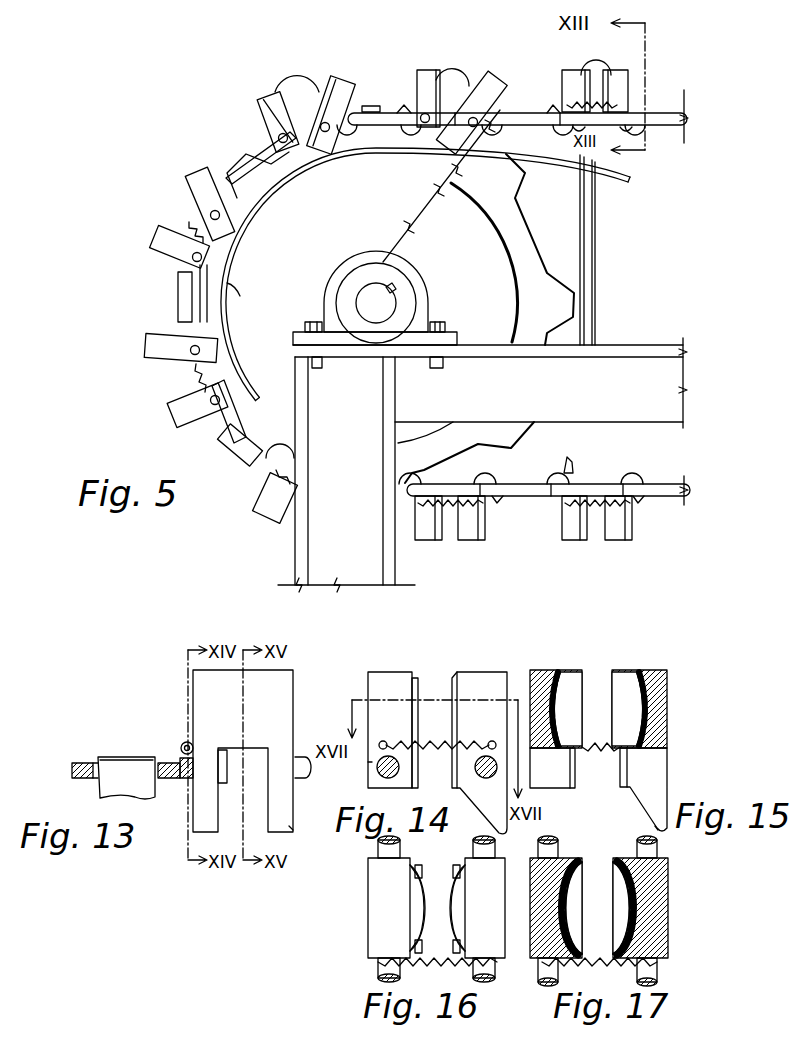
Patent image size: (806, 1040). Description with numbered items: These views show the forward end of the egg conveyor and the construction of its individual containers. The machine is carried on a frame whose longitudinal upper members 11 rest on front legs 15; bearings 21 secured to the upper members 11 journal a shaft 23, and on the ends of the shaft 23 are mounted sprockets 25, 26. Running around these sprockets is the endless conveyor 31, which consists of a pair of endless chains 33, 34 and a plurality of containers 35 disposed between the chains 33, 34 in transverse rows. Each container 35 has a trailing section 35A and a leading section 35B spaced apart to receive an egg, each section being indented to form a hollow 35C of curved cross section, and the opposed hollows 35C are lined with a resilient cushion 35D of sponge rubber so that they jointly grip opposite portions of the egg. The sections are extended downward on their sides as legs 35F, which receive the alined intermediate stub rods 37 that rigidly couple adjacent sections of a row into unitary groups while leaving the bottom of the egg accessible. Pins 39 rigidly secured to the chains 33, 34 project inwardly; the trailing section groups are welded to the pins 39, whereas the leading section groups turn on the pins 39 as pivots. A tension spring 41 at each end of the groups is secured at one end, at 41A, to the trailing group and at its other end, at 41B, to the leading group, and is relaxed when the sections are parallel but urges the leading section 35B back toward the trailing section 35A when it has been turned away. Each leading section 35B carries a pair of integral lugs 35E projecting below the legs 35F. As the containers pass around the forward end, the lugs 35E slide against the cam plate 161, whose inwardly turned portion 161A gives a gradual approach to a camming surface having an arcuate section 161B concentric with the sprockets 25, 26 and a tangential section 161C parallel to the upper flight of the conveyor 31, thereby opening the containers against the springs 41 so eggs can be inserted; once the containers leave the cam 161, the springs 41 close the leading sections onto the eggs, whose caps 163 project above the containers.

In FIG. 5, the longitudinal upper members 11 is at (653, 318).
In FIG. 5, the front legs 15 is at (300, 552).
In FIG. 5, the bearings 21 is at (425, 307).
In FIG. 5, the shaft 23 is at (362, 300).
In FIG. 5, the sprocket 25 is at (433, 222).
In FIG. 13, the sprocket 25 is at (118, 756).
In FIG. 5, the sprocket 26 is at (177, 298).
In FIG. 5, the endless conveyor 31 is at (155, 215).
In FIG. 5, the endless chain 33 is at (538, 114).
In FIG. 13, the endless chain 33 is at (72, 770).
In FIG. 5, the endless chain 34 is at (390, 117).
In FIG. 5, the container 35 is at (603, 552).
In FIG. 5, the trailing section 35A is at (258, 108).
In FIG. 14, the trailing section 35A is at (387, 677).
In FIG. 15, the trailing section 35A is at (530, 670).
In FIG. 16, the trailing section 35A is at (373, 915).
In FIG. 17, the trailing section 35A is at (532, 867).
In FIG. 5, the leading section 35B is at (342, 87).
In FIG. 13, the leading section 35B is at (283, 677).
In FIG. 14, the leading section 35B is at (483, 680).
In FIG. 15, the leading section 35B is at (677, 660).
In FIG. 16, the leading section 35B is at (465, 838).
In FIG. 17, the leading section 35B is at (668, 880).
In FIG. 15, the hollow 35C is at (553, 693).
In FIG. 17, the hollow 35C is at (637, 888).
In FIG. 14, the resilient cushion 35D is at (415, 677).
In FIG. 15, the resilient cushion 35D is at (553, 688).
In FIG. 16, the resilient cushion 35D is at (412, 900).
In FIG. 17, the resilient cushion 35D is at (637, 912).
In FIG. 5, the lugs 35E is at (573, 480).
In FIG. 13, the lugs 35E is at (289, 826).
In FIG. 15, the lugs 35E is at (647, 805).
In FIG. 14, the legs 35F is at (372, 762).
In FIG. 15, the legs 35F is at (545, 780).
In FIG. 13, the intermediate stub rods 37 is at (303, 758).
In FIG. 16, the intermediate stub rods 37 is at (377, 846).
In FIG. 17, the intermediate stub rods 37 is at (560, 845).
In FIG. 13, the pins 39 is at (181, 760).
In FIG. 14, the pins 39 is at (400, 767).
In FIG. 16, the pins 39 is at (378, 972).
In FIG. 13, the tension spring 41 is at (183, 744).
In FIG. 14, the tension spring 41 is at (430, 740).
In FIG. 15, the tension spring 41 is at (600, 755).
In FIG. 16, the tension spring 41 is at (467, 960).
In FIG. 14, the spring securing point 41A is at (383, 740).
In FIG. 14, the spring securing point 41B is at (492, 740).
In FIG. 5, the cam plate 161 is at (272, 186).
In FIG. 5, the inwardly turned portion 161A is at (264, 418).
In FIG. 5, the arcuate section 161B is at (228, 284).
In FIG. 5, the tangential section 161C is at (450, 153).
In FIG. 5, the cap 163 is at (305, 68).